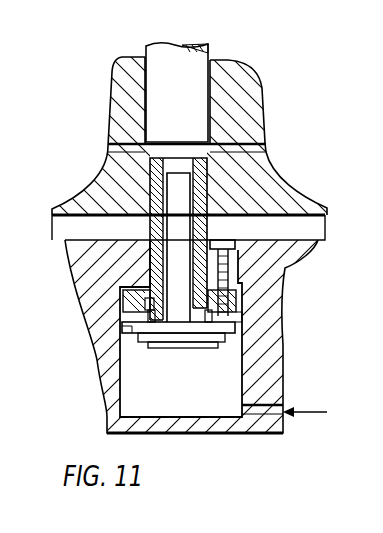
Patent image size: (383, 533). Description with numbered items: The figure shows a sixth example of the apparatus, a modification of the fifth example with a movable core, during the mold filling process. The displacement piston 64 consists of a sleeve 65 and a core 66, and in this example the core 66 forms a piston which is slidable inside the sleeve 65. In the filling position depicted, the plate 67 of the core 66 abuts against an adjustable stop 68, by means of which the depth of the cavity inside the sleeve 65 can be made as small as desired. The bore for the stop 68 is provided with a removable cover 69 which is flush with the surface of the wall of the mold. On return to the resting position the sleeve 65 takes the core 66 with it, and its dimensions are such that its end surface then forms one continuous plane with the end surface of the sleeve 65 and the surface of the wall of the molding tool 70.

The displacement piston 64 is at (213, 190).
The sleeve 65 is at (157, 170).
The core 66 is at (177, 200).
The plate 67 is at (145, 337).
The adjustable stop 68 is at (236, 319).
The removable cover 69 is at (228, 242).
The molding tool 70 is at (284, 265).